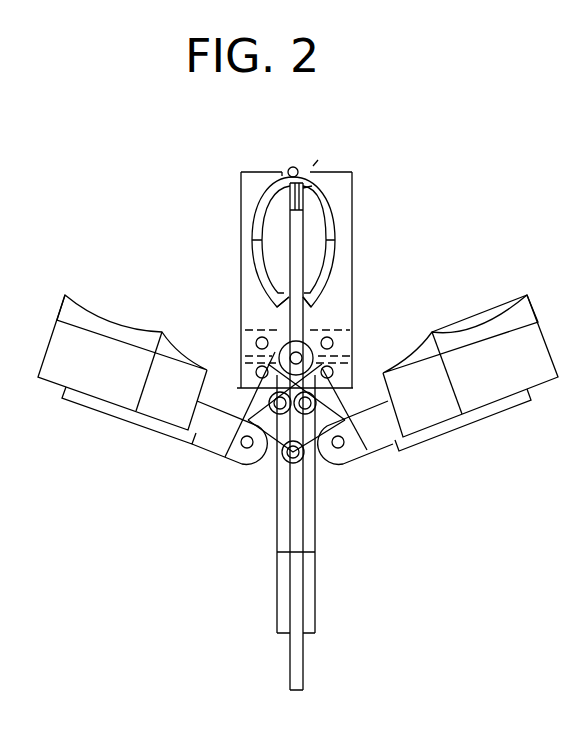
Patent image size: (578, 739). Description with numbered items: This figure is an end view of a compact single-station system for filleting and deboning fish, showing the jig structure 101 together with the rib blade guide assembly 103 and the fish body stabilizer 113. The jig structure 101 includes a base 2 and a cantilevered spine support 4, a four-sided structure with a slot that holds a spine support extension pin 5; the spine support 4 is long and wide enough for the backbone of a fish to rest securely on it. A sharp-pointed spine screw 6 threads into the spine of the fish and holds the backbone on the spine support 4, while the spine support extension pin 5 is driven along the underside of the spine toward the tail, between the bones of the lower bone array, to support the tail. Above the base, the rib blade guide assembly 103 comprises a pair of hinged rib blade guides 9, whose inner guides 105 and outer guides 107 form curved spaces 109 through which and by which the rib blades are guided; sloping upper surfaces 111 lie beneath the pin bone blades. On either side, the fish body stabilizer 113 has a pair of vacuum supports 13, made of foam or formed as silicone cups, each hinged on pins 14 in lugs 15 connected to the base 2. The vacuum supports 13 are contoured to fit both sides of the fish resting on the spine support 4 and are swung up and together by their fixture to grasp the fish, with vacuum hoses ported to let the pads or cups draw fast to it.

The base 2 is at (304, 665).
The cantilevered spine support 4 is at (303, 193).
The spine support extension pin 5 is at (308, 193).
The spine screw 6 is at (290, 168).
The hinged rib blade guides 9 is at (270, 272).
The vacuum supports 13 is at (92, 310).
The pins 14 is at (310, 357).
The lugs 15 is at (366, 470).
The jig structure 101 is at (313, 166).
The rib blade guide assembly 103 is at (365, 193).
The inner guides 105 is at (258, 242).
The outer guides 107 is at (240, 280).
The curved spaces 109 is at (260, 198).
The sloping upper surfaces 111 is at (282, 172).
The fish body stabilizer 113 is at (480, 298).